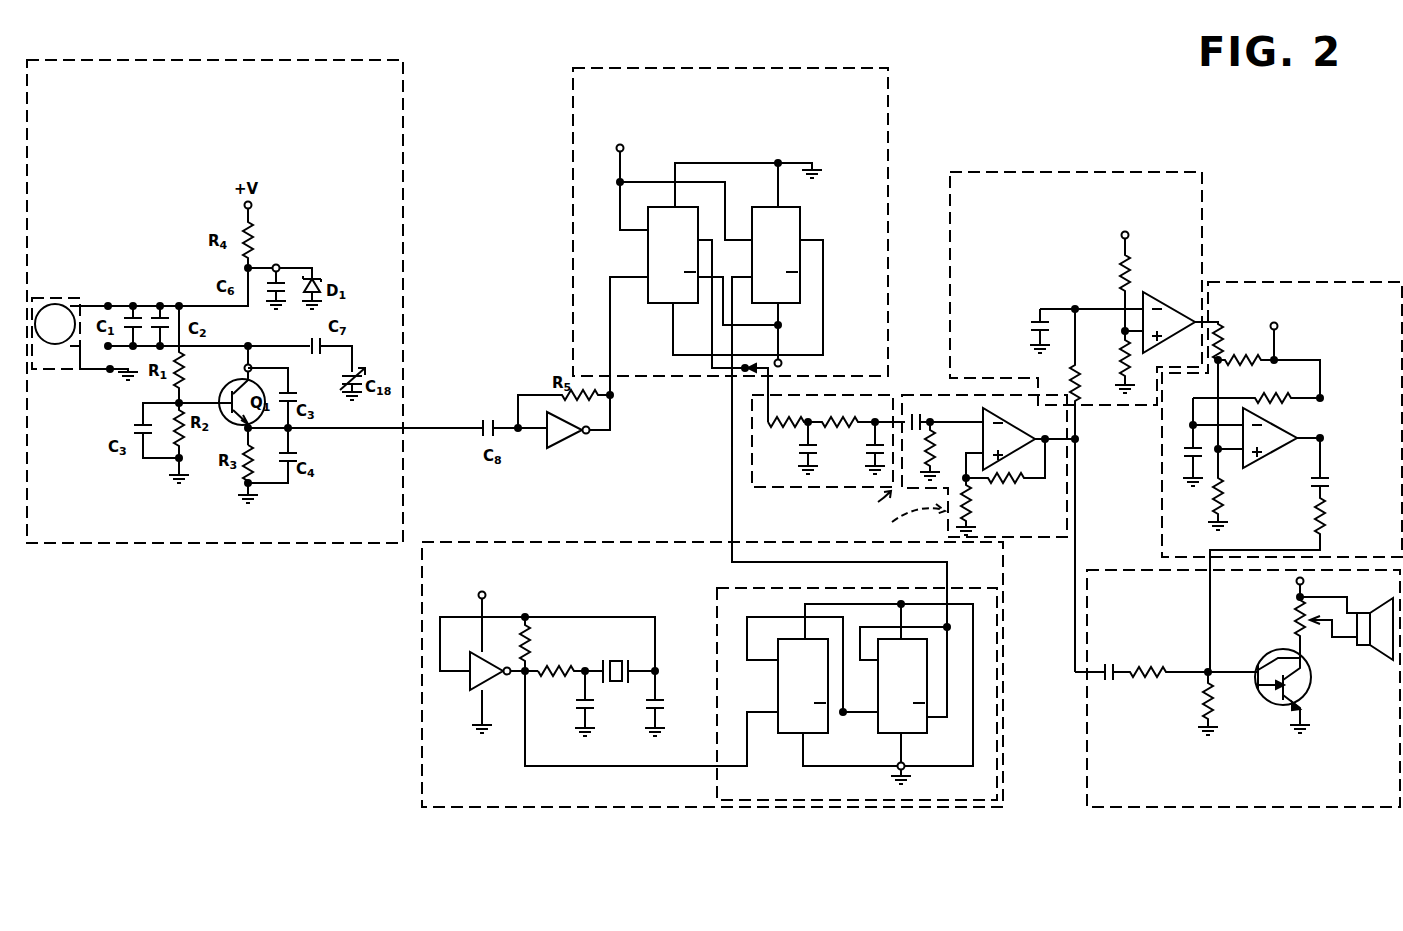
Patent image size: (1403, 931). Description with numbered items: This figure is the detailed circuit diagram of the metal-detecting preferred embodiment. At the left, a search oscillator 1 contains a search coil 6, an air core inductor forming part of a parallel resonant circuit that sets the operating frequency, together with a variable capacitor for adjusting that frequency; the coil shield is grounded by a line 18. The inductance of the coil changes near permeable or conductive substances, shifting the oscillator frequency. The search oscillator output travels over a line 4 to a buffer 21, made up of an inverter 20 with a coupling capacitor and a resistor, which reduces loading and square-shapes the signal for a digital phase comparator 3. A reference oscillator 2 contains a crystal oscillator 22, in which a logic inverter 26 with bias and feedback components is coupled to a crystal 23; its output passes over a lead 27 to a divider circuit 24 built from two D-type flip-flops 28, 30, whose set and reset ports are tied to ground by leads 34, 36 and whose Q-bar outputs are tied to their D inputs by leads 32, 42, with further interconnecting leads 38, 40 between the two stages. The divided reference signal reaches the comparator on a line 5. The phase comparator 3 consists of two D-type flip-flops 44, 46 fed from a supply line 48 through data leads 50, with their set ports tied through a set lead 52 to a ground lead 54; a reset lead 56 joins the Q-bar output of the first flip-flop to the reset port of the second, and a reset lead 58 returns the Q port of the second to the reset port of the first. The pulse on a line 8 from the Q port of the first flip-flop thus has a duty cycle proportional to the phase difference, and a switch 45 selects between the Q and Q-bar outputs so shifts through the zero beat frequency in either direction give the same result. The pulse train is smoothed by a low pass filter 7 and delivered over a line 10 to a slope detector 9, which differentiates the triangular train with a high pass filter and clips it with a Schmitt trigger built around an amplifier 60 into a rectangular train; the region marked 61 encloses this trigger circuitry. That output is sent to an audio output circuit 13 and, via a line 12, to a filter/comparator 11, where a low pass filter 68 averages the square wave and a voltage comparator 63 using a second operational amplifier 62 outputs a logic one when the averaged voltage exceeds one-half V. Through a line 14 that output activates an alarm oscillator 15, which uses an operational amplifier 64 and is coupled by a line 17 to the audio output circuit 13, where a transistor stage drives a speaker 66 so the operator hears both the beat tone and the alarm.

The search oscillator circuit 1 is at (403, 95).
The reference oscillator circuit 2 is at (422, 769).
The digital phase comparator 3 is at (573, 102).
The line 4 is at (436, 432).
The line 5 is at (731, 508).
The search coil 6 is at (52, 345).
The low pass filter 7 is at (752, 463).
The line 8 is at (712, 340).
The slope detector 9 is at (928, 398).
The line 10 is at (877, 418).
The filter/comparator 11 is at (1202, 200).
The line 12 is at (1080, 417).
The audio output circuit 13 is at (1087, 758).
The line 14 is at (1218, 322).
The alarm oscillator 15 is at (1282, 397).
The line 17 is at (1206, 621).
The line 18 is at (108, 372).
The inverter 20 is at (560, 446).
The buffer 21 is at (583, 353).
The crystal oscillator 22 is at (555, 570).
The crystal 23 is at (615, 660).
The divider circuit 24 is at (717, 790).
The logic inverter 26 is at (466, 681).
The lead 27 is at (540, 766).
The D-type flip-flop 28 is at (778, 726).
The D-type flip-flop 30 is at (878, 728).
The lead 32 is at (747, 630).
The lead 34 is at (862, 604).
The lead 36 is at (851, 768).
The clock line 38 is at (878, 712).
The feedback line 40 is at (878, 660).
The lead 42 is at (927, 662).
The D-type flip-flop 44 is at (648, 250).
The switch 45 is at (762, 373).
The D-type flip-flop 46 is at (800, 226).
The supply line 48 is at (619, 204).
The data line 50 is at (650, 182).
The set line 52 is at (732, 163).
The ground line 54 is at (749, 186).
The reset line 56 is at (778, 326).
The reset line 58 is at (823, 287).
The amplifier 60 is at (1028, 422).
The slope detector 61 is at (1016, 522).
The operational amplifier 62 is at (1172, 302).
The voltage comparator 63 is at (1143, 301).
The operational amplifier 64 is at (1270, 450).
The speaker 66 is at (1393, 660).
The low pass filter 68 is at (1073, 308).